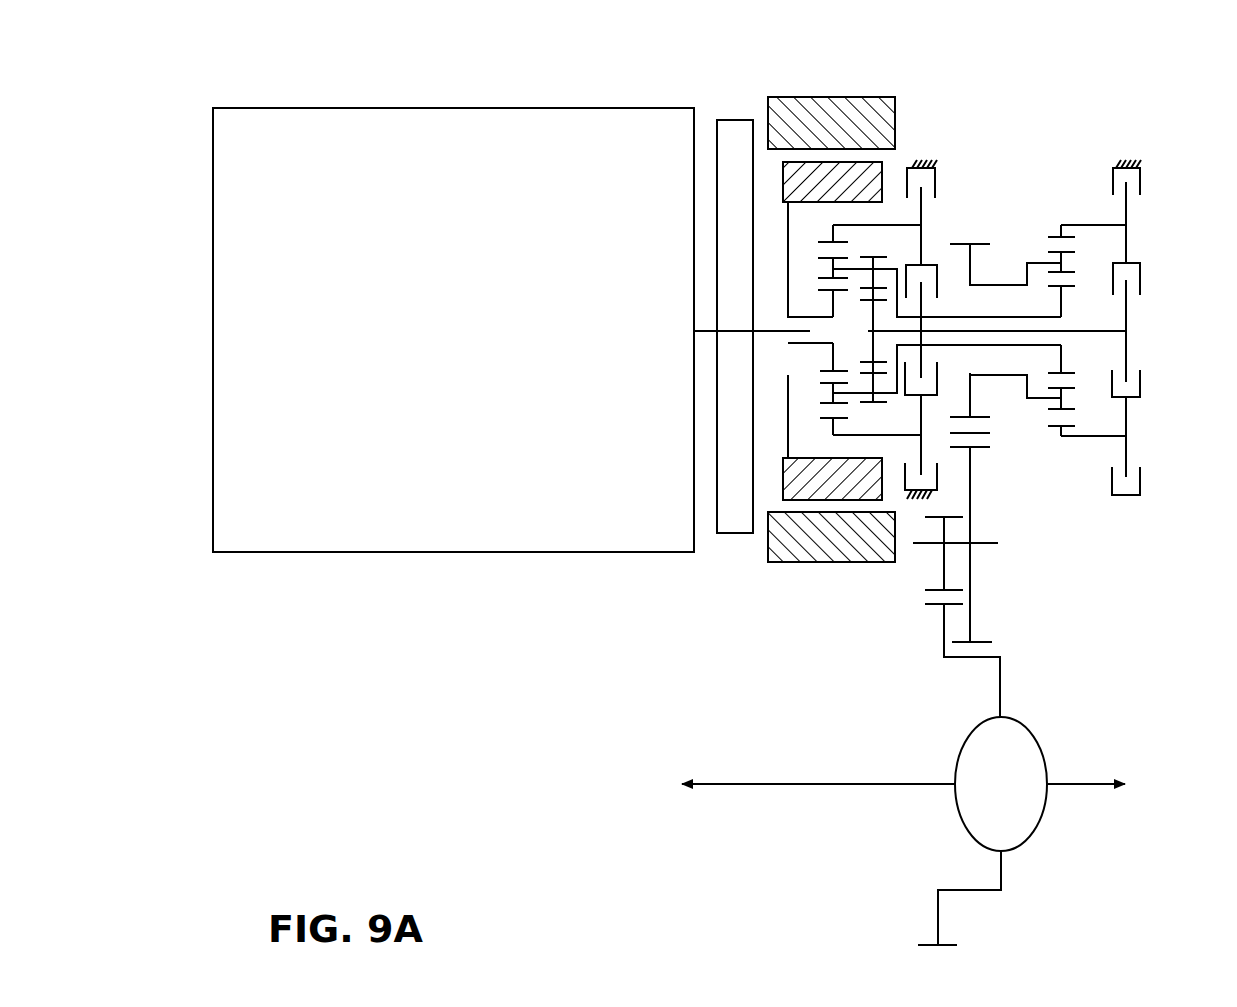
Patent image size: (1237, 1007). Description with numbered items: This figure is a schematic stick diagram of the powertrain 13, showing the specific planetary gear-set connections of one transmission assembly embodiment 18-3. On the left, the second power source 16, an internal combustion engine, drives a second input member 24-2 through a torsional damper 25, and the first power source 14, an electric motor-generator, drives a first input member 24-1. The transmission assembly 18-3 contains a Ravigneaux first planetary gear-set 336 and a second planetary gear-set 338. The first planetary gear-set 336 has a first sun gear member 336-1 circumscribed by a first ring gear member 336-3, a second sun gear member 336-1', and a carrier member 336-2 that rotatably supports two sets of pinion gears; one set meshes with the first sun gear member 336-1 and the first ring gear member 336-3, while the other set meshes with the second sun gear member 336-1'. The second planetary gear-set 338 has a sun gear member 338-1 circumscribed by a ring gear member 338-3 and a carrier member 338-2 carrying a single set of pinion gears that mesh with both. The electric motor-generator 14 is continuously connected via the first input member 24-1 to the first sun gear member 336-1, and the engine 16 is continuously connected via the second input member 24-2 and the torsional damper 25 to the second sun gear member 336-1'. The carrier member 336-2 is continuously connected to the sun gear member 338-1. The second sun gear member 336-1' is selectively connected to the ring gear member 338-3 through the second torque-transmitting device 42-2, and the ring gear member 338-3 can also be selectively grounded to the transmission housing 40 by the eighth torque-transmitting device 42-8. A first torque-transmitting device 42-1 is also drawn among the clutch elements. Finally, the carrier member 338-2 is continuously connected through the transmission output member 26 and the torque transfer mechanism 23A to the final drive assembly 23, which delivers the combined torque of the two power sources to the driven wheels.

The powertrain 13 is at (615, 645).
The first power source 14 is at (768, 557).
The second power source 16 is at (440, 553).
The transmission assembly embodiment 18-3 is at (985, 85).
The final drive assembly 23 is at (1040, 741).
The torque transfer mechanism 23A is at (1012, 583).
The first input member 24-1 is at (788, 402).
The second input member 24-2 is at (762, 331).
The torsional damper 25 is at (733, 120).
The transmission output member 26 is at (968, 399).
The transmission housing 40 is at (912, 160).
The first torque-transmitting device 42-1 is at (1140, 176).
The second torque-transmitting device 42-2 is at (1134, 264).
The eighth torque-transmitting device 42-8 is at (937, 180).
The first planetary gear-set 336 is at (825, 302).
The first sun gear member 336-1 is at (804, 373).
The second sun gear member 336-1' is at (968, 339).
The carrier member 336-2 is at (853, 394).
The first ring gear member 336-3 is at (828, 423).
The second planetary gear-set 338 is at (965, 207).
The sun gear member 338-1 is at (1063, 375).
The carrier member 338-2 is at (1046, 262).
The ring gear member 338-3 is at (1052, 430).